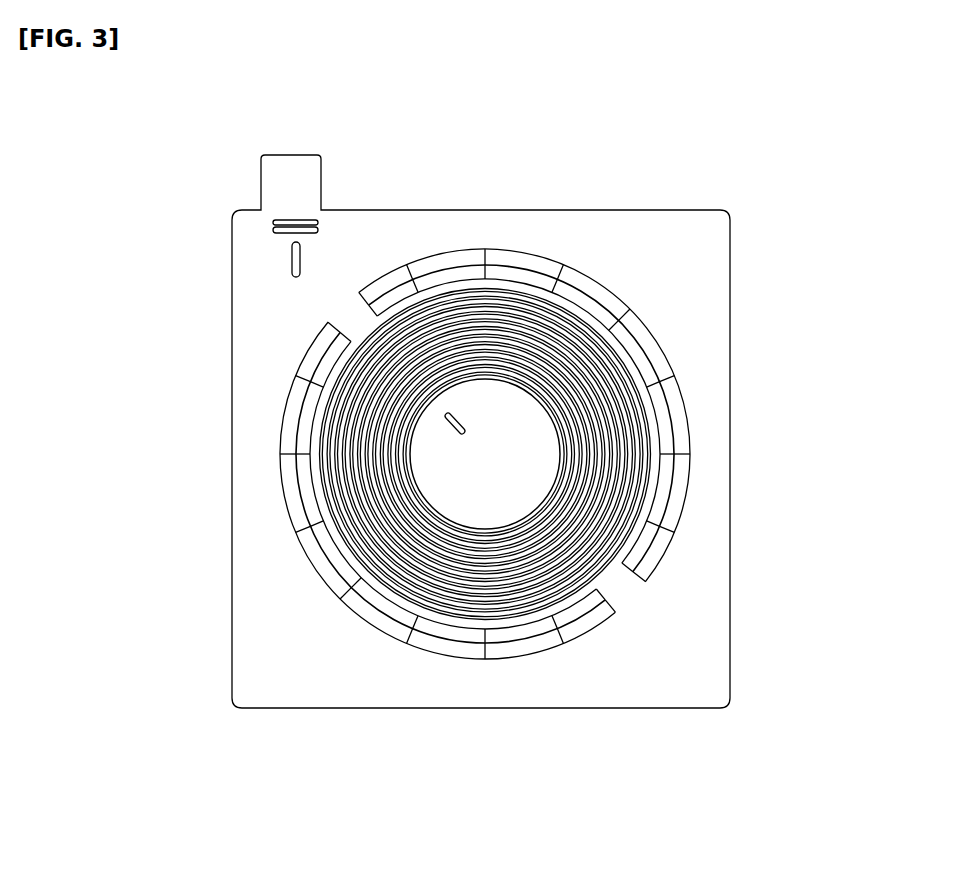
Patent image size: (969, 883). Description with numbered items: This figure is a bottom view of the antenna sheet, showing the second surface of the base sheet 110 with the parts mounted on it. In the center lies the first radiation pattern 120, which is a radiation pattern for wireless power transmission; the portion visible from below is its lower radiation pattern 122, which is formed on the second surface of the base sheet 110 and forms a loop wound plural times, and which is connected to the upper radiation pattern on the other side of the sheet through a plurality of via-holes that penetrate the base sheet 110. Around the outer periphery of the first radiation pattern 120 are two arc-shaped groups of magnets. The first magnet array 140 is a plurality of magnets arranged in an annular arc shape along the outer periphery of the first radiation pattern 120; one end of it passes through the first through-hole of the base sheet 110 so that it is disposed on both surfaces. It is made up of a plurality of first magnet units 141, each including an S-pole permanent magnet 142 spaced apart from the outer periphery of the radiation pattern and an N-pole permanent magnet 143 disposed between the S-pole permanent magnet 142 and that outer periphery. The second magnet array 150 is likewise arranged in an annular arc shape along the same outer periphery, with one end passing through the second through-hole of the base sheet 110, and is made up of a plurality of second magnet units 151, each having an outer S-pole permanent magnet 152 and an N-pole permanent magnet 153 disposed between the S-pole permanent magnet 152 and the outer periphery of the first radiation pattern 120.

The base sheet 110 is at (232, 336).
The first radiation pattern 120 is at (589, 454).
The lower radiation pattern 122 is at (648, 432).
The first magnet array 140 is at (485, 423).
The first magnet unit 141 is at (485, 423).
The S-pole permanent magnet 142 is at (561, 264).
The N-pole permanent magnet 143 is at (506, 272).
The second magnet array 150 is at (429, 467).
The second magnet unit 151 is at (429, 453).
The S-pole permanent magnet 152 is at (282, 470).
The N-pole permanent magnet 153 is at (303, 500).